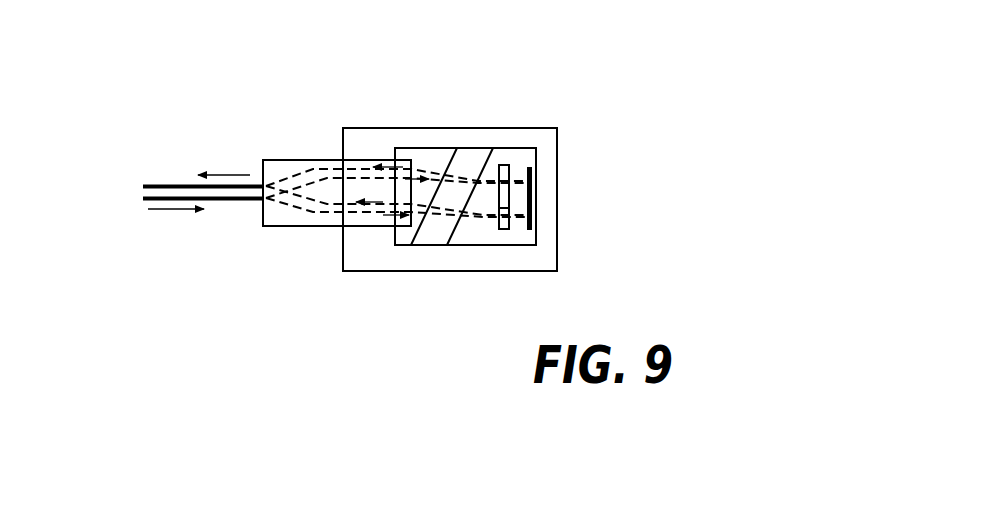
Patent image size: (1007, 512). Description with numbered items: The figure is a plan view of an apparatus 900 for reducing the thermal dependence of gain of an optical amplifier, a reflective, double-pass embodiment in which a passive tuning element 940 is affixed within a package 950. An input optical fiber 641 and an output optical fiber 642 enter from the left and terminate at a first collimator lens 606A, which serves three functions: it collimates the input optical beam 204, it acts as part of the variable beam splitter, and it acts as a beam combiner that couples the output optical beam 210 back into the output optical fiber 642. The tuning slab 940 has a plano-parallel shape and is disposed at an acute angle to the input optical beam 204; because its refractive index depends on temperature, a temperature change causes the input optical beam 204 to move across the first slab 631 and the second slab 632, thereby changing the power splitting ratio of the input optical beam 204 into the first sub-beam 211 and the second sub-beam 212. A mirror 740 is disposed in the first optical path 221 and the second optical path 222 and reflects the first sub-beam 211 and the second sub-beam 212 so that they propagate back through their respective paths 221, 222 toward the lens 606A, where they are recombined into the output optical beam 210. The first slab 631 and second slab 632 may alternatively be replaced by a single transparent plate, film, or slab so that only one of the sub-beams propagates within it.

The apparatus 900 is at (655, 44).
The package 950 is at (558, 143).
The passive tuning element 940 is at (466, 156).
The first collimator lens 606A is at (293, 160).
The output optical fiber 642 is at (173, 184).
The input optical fiber 641 is at (243, 201).
The output optical beam 210 is at (223, 174).
The input optical beam 204 is at (172, 210).
The second optical path 222 is at (323, 170).
The first optical path 221 is at (313, 213).
The second sub-beam 212 is at (413, 177).
The first sub-beam 211 is at (393, 216).
The second slab 632 is at (507, 167).
The first slab 631 is at (503, 229).
The mirror 740 is at (532, 202).